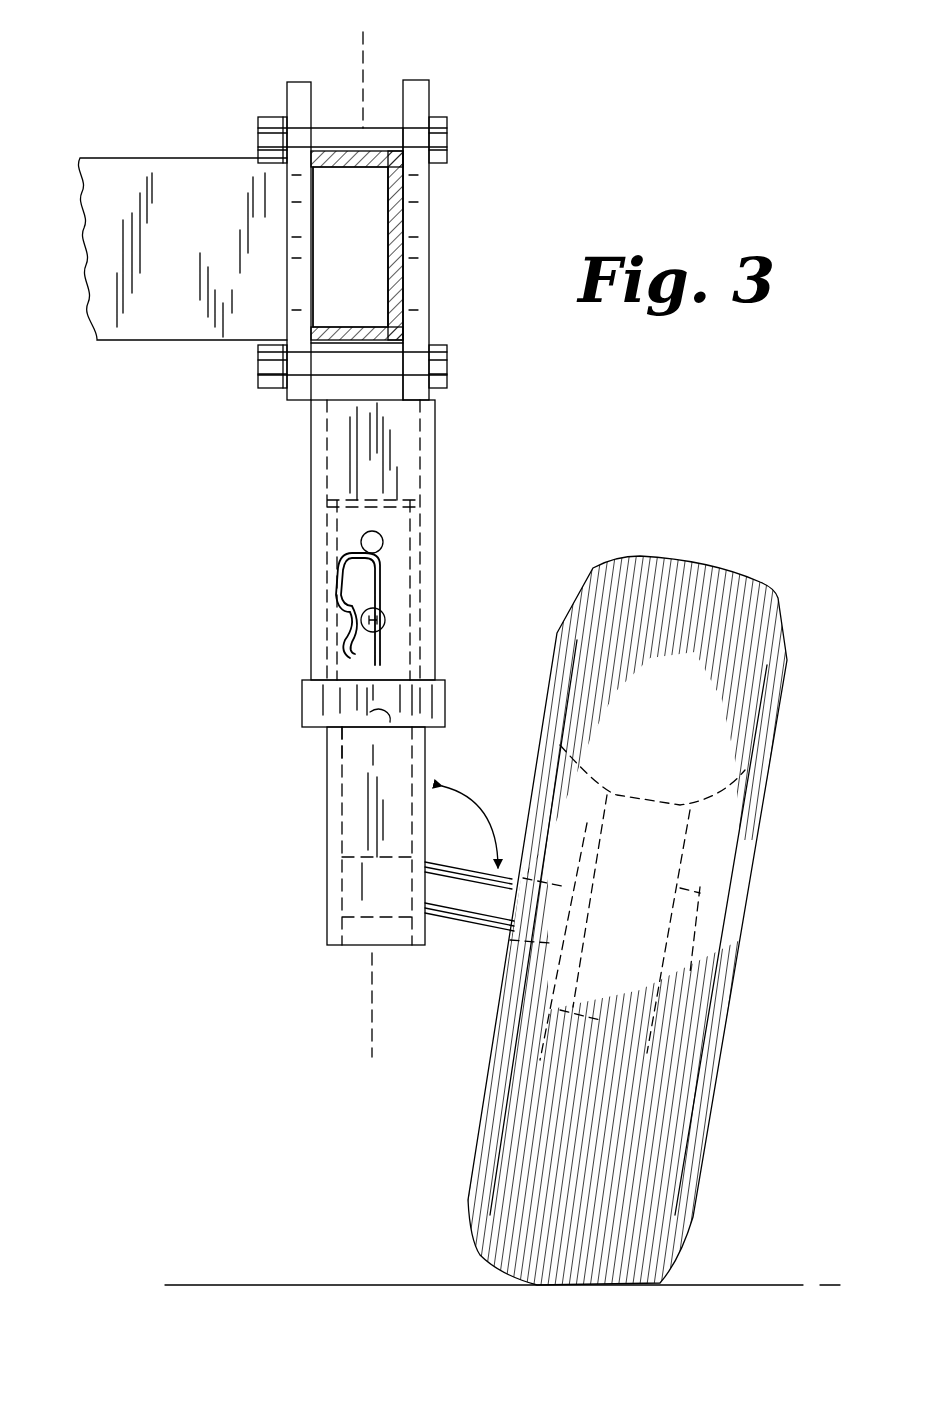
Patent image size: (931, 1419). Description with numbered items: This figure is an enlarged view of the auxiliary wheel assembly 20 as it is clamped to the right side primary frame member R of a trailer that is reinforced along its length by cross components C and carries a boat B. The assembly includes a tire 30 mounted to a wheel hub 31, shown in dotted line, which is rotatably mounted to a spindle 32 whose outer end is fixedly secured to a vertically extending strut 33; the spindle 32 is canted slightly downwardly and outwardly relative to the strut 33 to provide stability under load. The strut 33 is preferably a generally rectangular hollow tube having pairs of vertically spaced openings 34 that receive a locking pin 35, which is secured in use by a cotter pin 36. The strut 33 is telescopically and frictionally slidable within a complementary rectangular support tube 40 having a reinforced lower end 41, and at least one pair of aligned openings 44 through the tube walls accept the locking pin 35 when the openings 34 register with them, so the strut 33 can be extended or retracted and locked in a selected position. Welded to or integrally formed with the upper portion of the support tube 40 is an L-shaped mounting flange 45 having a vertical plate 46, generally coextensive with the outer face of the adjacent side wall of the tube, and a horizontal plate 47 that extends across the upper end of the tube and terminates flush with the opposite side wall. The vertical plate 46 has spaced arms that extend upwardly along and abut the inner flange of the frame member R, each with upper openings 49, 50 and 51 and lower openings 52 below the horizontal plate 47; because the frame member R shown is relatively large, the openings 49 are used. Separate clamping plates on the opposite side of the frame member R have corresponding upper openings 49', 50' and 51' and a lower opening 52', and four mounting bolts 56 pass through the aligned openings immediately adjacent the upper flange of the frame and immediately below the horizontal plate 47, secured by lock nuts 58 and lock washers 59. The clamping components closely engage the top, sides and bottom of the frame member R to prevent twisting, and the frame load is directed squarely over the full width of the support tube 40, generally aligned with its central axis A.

The auxiliary wheel assembly 20 is at (303, 646).
The tire 30 is at (670, 1157).
The wheel hub 31 is at (680, 860).
The spindle 32 is at (475, 935).
The strut 33 is at (328, 828).
The openings 34 is at (420, 738).
The locking pin 35 is at (385, 620).
The cotter pin 36 is at (340, 577).
The support tube 40 is at (310, 459).
The reinforced lower end 41 is at (308, 705).
The aligned openings 44 is at (382, 541).
The L-shaped mounting flange 45 is at (437, 300).
The vertical plate 46 is at (432, 98).
The horizontal plate 47 is at (340, 347).
The upper openings 49 is at (466, 264).
The upper openings 49' is at (264, 237).
The openings 50 is at (459, 245).
The openings 50' is at (357, 177).
The openings 51 is at (459, 247).
The openings 51' is at (344, 247).
The lower openings 52 is at (388, 280).
The lower opening 52' is at (353, 319).
The mounting bolts 56 is at (450, 128).
The lock nuts 58 is at (258, 124).
The lock washers 59 is at (258, 160).
The central axis A is at (366, 548).
The boat B is at (470, 821).
The cross components C is at (130, 158).
The right side primary frame member R is at (387, 247).